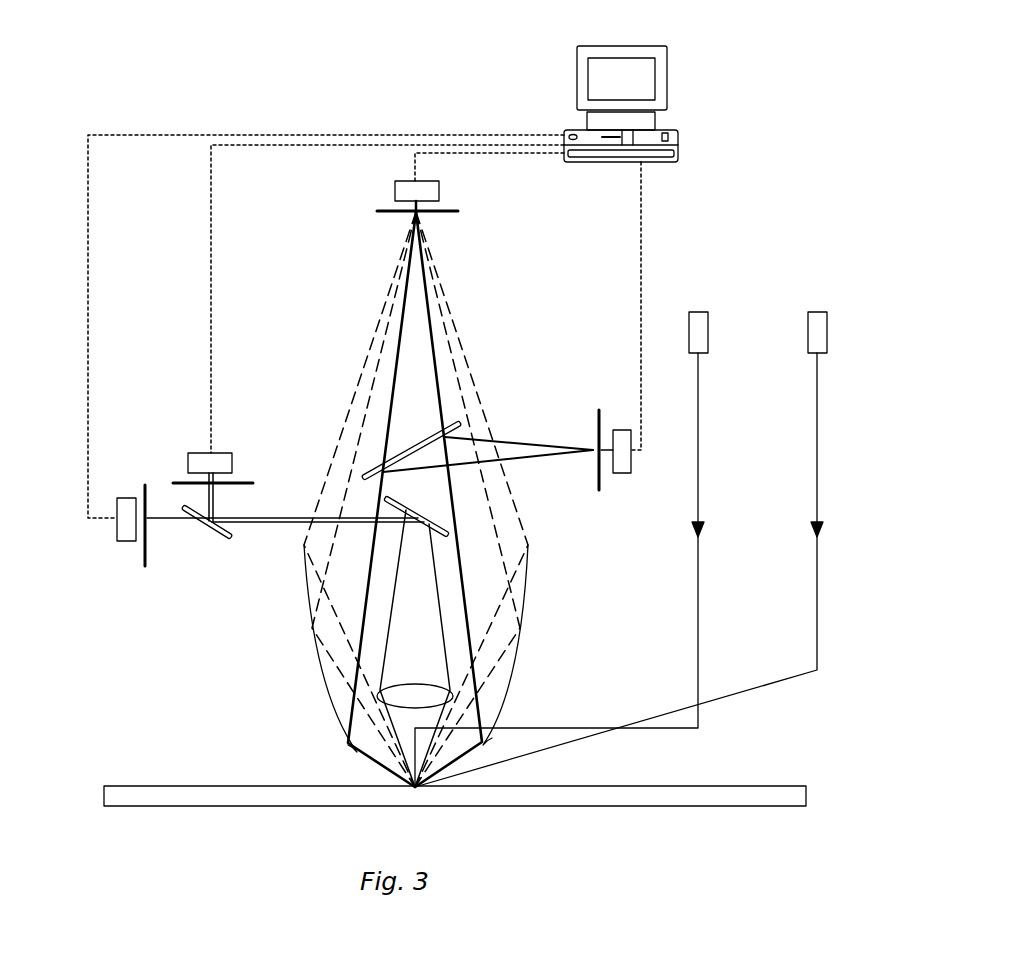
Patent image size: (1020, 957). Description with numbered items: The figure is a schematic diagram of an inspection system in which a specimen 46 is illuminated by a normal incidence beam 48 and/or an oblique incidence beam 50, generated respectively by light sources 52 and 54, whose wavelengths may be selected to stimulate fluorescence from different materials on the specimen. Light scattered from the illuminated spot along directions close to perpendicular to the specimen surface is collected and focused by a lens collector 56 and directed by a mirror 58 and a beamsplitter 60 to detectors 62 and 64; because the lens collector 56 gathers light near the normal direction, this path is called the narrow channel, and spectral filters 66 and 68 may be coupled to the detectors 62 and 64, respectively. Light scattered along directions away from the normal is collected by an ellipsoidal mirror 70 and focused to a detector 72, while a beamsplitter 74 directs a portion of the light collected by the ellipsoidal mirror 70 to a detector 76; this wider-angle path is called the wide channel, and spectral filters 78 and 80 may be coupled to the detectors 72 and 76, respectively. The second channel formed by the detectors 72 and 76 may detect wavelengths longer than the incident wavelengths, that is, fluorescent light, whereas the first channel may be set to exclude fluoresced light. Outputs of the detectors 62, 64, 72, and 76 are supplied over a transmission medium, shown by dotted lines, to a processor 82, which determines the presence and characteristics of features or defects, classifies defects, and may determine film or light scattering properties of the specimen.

The specimen 46 is at (795, 786).
The normal incidence beam 48 is at (698, 478).
The oblique incidence beam 50 is at (817, 478).
The light source 52 is at (706, 322).
The light source 54 is at (825, 322).
The lens collector 56 is at (393, 684).
The mirror 58 is at (396, 508).
The beamsplitter 60 is at (218, 537).
The detector 62 is at (126, 541).
The detector 64 is at (232, 460).
The spectral filter 66 is at (144, 493).
The spectral filter 68 is at (172, 483).
The ellipsoidal mirror 70 is at (510, 664).
The detector 72 is at (440, 189).
The beamsplitter 74 is at (418, 442).
The detector 76 is at (614, 430).
The spectral filter 78 is at (458, 212).
The spectral filter 80 is at (600, 490).
The processor 82 is at (678, 141).